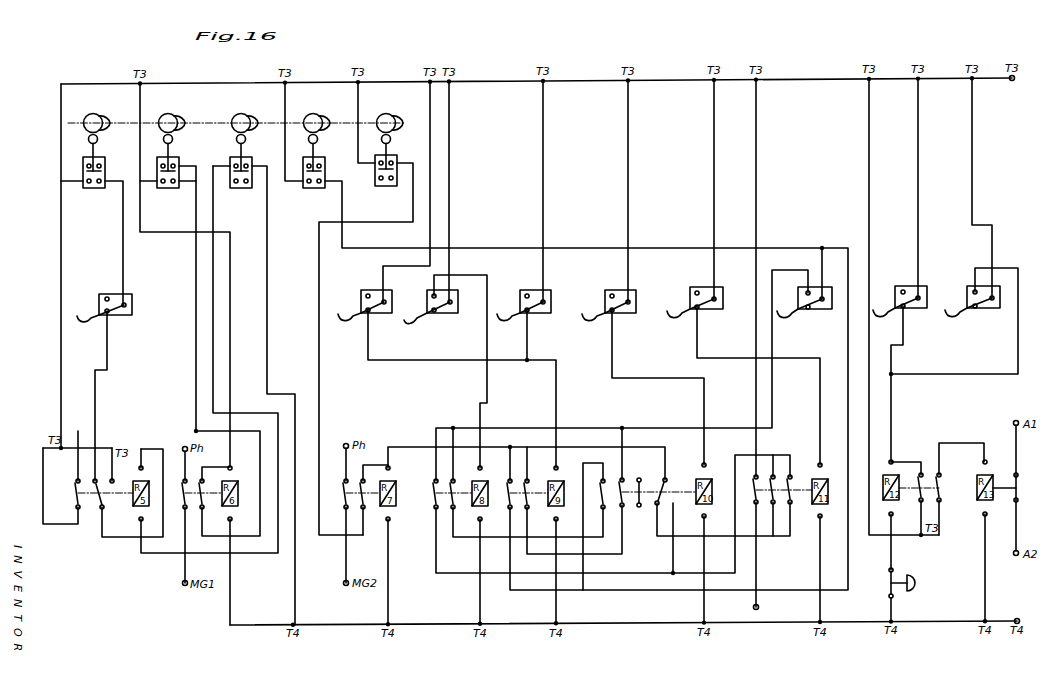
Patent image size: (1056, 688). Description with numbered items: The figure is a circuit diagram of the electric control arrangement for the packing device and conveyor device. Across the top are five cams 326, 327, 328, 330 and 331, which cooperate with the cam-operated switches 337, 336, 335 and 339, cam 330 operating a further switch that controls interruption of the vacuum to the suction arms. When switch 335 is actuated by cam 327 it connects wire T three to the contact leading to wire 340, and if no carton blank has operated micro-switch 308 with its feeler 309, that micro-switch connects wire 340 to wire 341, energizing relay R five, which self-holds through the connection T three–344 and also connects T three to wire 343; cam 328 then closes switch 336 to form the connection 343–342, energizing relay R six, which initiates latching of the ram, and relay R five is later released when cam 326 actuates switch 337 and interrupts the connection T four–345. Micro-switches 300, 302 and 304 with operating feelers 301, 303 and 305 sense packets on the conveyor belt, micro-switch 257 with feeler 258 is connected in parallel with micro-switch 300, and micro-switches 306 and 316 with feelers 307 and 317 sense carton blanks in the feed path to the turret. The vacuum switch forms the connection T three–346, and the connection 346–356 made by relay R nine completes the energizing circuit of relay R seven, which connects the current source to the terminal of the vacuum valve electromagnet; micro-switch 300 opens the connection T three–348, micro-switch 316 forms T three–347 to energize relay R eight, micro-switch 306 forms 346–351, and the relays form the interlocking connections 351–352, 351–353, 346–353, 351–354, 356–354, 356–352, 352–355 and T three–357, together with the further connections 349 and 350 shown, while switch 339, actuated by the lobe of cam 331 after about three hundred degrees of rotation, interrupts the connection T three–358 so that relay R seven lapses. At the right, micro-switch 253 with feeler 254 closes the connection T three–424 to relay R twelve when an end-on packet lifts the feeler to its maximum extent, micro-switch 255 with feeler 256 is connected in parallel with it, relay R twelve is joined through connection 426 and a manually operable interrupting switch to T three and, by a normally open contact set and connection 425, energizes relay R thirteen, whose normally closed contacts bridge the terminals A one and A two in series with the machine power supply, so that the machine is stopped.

The cam 327 is at (97, 134).
The cam 328 is at (171, 134).
The cam 326 is at (244, 134).
The cam 330 is at (316, 151).
The cam 331 is at (389, 133).
The switch 335 is at (83, 181).
The switch 336 is at (168, 181).
The switch 337 is at (241, 181).
The switch 339 is at (386, 179).
The wire 340 is at (116, 236).
The wire 342 is at (196, 275).
The wire 343 is at (141, 337).
The wire 345 is at (209, 353).
The wire 346 is at (586, 378).
The conductor 350 is at (569, 343).
The micro-switch 308 is at (127, 302).
The feeler 309 is at (86, 325).
The wire 341 is at (114, 396).
The micro-switch 257 is at (388, 301).
The feeler 258 is at (344, 323).
The micro-switch 316 is at (455, 301).
The feeler 317 is at (413, 323).
The micro-switch 300 is at (548, 301).
The operating feeler 301 is at (508, 323).
The micro-switch 302 is at (633, 301).
The operating feeler 303 is at (591, 323).
The micro-switch 304 is at (719, 298).
The operating feeler 305 is at (676, 321).
The micro-switch 306 is at (824, 278).
The feeler 307 is at (787, 319).
The micro-switch 255 is at (923, 297).
The feeler 256 is at (884, 318).
The micro-switch 253 is at (992, 290).
The feeler 254 is at (957, 318).
The wire 347 is at (472, 371).
The wire 348 is at (462, 389).
The conductor 349 is at (658, 387).
The wire 351 is at (620, 383).
The wire 352 is at (607, 507).
The wire 353 is at (529, 508).
The wire 354 is at (585, 500).
The wire 355 is at (717, 512).
The wire 356 is at (526, 464).
The wire 357 is at (768, 544).
The wire 358 is at (373, 507).
The wire 344 is at (128, 493).
The connection 424 is at (956, 395).
The connection 425 is at (960, 483).
The connection 426 is at (903, 568).